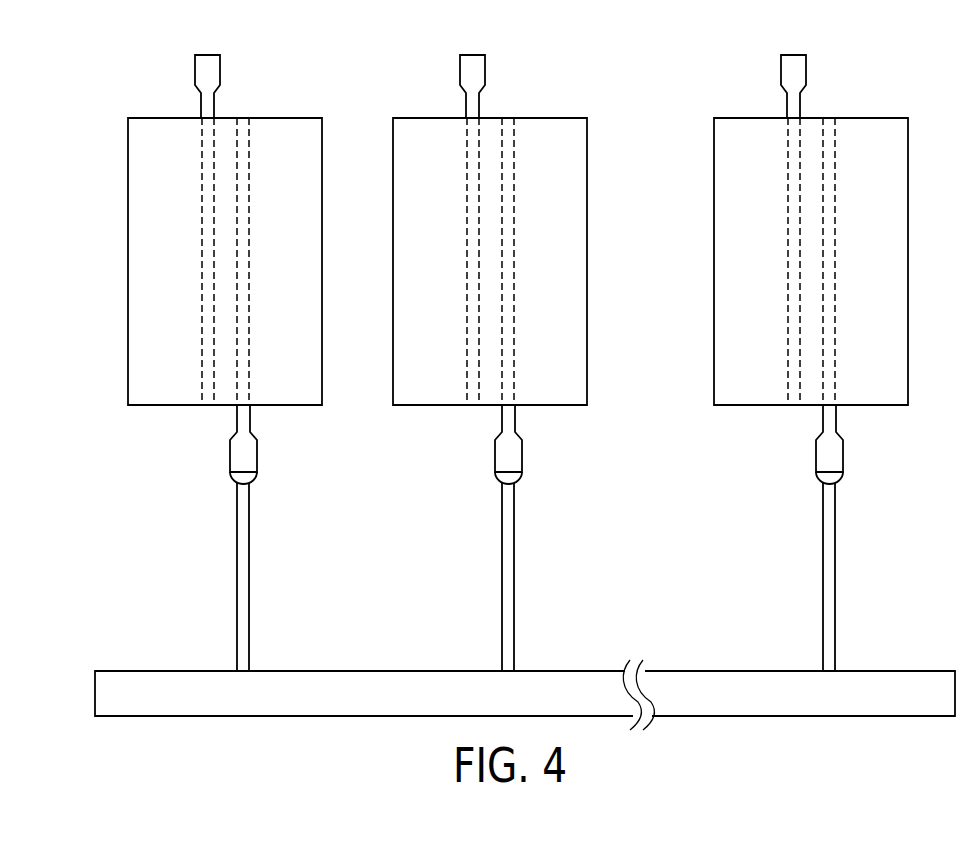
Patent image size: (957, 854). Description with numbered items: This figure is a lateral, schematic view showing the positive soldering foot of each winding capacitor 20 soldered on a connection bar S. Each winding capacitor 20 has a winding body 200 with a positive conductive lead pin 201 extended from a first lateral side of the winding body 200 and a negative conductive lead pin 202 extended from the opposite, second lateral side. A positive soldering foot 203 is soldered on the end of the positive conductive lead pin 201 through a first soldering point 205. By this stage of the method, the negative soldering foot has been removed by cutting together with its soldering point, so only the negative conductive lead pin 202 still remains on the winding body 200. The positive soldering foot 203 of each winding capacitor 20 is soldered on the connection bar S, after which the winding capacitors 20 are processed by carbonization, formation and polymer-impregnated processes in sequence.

The winding capacitor 20 is at (504, 356).
The winding body 200 is at (145, 210).
The positive conductive lead pin 201 is at (240, 440).
The negative conductive lead pin 202 is at (202, 73).
The positive soldering foot 203 is at (242, 543).
The first soldering point 205 is at (235, 477).
The connection bar S is at (348, 671).